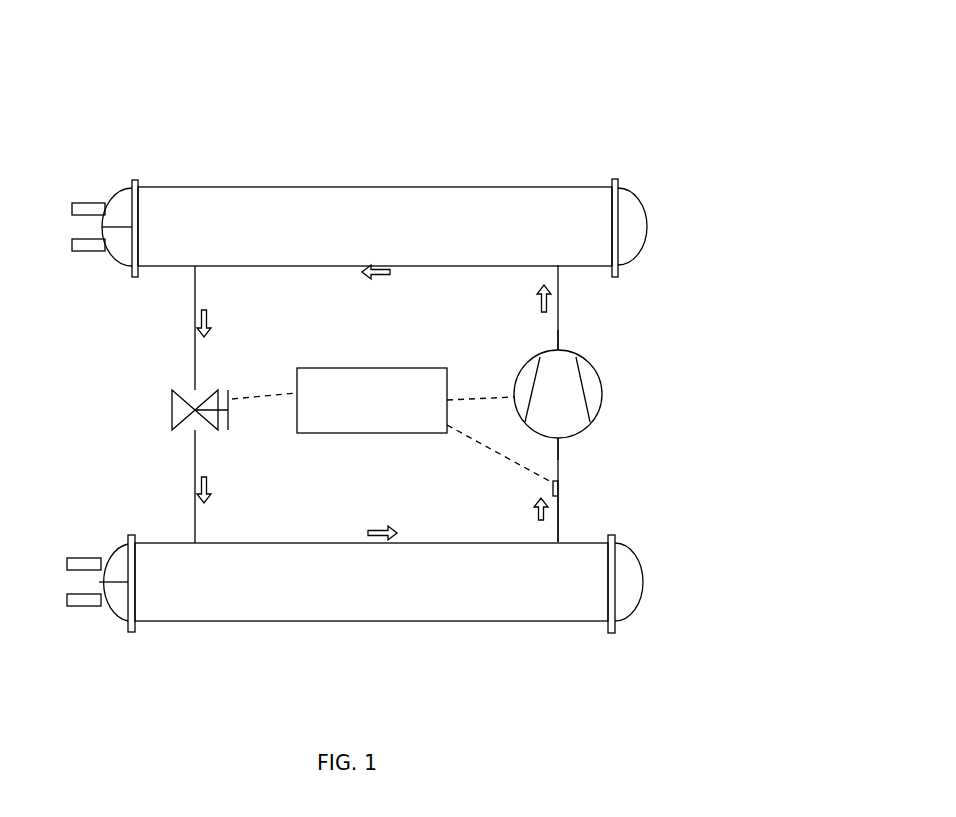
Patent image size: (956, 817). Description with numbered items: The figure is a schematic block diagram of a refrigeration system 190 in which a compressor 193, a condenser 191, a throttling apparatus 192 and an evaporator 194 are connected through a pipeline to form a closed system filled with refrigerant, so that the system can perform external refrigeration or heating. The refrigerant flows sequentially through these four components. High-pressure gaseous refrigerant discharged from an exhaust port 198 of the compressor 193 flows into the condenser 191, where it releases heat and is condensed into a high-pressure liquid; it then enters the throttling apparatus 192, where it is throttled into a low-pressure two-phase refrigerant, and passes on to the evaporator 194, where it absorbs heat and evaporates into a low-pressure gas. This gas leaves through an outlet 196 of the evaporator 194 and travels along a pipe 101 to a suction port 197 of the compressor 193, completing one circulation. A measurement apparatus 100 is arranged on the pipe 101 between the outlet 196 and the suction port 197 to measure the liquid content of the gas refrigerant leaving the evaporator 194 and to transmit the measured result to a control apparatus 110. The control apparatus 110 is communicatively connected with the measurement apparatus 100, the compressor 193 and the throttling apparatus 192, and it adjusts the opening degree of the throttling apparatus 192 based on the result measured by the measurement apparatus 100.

The refrigeration system 190 is at (564, 93).
The condenser 191 is at (385, 203).
The throttling apparatus 192 is at (200, 427).
The compressor 193 is at (599, 383).
The evaporator 194 is at (417, 603).
The control apparatus 110 is at (360, 374).
The exhaust port 198 is at (558, 350).
The suction port 197 is at (560, 440).
The measurement apparatus 100 is at (560, 487).
The pipe 101 is at (560, 512).
The outlet 196 is at (555, 541).